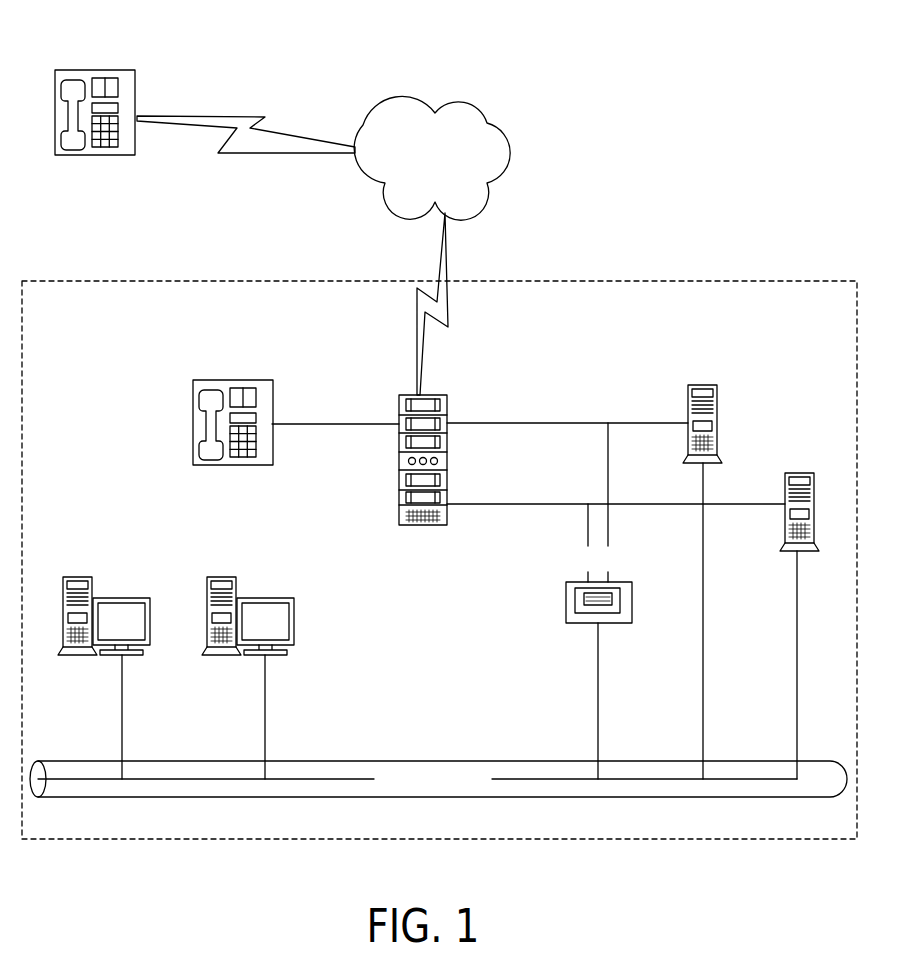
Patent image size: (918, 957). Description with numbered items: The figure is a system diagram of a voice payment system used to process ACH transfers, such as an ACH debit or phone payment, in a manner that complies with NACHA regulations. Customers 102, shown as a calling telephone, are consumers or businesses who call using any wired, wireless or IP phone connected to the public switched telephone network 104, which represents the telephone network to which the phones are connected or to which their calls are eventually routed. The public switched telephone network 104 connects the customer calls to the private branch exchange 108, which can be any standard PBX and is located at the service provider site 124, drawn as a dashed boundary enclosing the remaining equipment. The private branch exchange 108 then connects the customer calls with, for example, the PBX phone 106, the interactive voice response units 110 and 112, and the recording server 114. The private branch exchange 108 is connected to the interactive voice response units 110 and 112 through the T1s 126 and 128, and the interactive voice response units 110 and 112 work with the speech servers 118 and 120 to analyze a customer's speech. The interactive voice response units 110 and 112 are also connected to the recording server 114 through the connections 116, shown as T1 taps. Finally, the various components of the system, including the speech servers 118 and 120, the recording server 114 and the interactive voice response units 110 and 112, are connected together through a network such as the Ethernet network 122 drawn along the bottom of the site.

The customers 102 is at (82, 70).
The public switched telephone network 104 is at (410, 97).
The PBX phone 106 is at (215, 380).
The private branch exchange 108 is at (399, 407).
The interactive voice response unit 110 is at (699, 385).
The interactive voice response unit 112 is at (800, 473).
The recording server 114 is at (564, 600).
The connections 116 is at (633, 545).
The speech server 118 is at (78, 577).
The speech server 120 is at (222, 577).
The Ethernet network 122 is at (410, 760).
The service provider site 124 is at (724, 280).
The T1 126 is at (497, 423).
The T1 128 is at (470, 504).